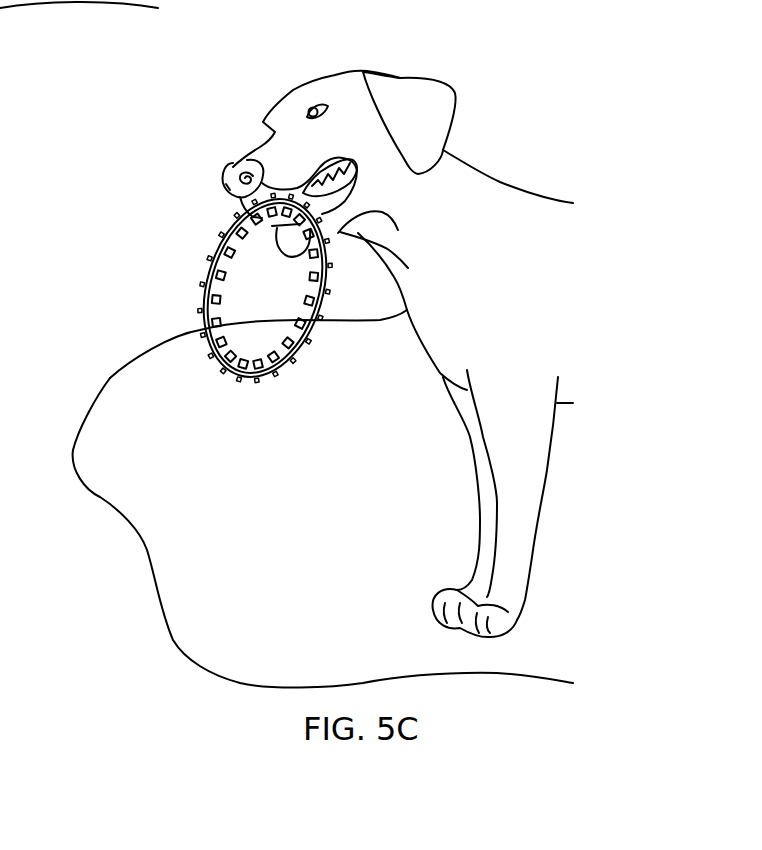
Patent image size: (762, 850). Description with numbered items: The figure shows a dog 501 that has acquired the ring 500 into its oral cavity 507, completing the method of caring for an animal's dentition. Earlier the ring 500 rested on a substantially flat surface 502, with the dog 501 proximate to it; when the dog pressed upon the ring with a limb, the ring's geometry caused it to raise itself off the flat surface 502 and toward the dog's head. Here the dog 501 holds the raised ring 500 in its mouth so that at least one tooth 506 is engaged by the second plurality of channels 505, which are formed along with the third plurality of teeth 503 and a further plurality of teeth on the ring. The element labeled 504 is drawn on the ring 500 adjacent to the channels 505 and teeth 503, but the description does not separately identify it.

The ring 500 is at (256, 320).
The dog 501 is at (523, 187).
The substantially flat surface 502 is at (110, 378).
The third plurality of teeth 503 is at (313, 347).
The ring body 504 is at (332, 325).
The second plurality of channels 505 is at (330, 343).
The tooth 506 is at (351, 182).
The oral cavity 507 is at (344, 158).